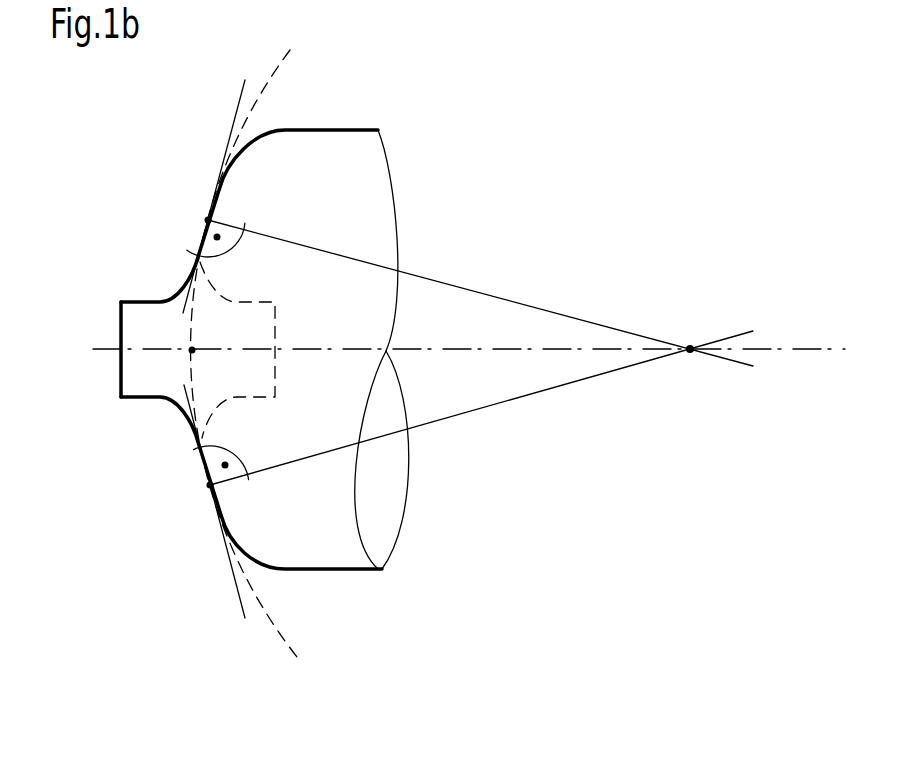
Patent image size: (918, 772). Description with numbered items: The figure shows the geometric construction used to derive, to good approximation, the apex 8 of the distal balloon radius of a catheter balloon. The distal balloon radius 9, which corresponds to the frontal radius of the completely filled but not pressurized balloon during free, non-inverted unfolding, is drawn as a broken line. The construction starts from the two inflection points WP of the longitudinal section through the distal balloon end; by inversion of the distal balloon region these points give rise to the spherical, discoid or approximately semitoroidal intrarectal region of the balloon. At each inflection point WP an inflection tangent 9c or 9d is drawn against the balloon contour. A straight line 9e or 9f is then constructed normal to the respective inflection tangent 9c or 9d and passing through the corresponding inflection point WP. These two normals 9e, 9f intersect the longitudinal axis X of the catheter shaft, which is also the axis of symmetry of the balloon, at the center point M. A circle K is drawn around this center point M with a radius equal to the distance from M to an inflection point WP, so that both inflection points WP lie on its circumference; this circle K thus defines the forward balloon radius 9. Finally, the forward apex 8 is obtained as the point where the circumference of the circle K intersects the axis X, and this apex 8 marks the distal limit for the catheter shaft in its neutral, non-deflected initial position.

The apex 8 is at (188, 352).
The distal balloon radius 9 is at (277, 630).
The inflection tangent 9c is at (228, 143).
The inflection tangent 9d is at (237, 588).
The normal straight line 9e is at (522, 302).
The normal straight line 9f is at (538, 393).
The inflection points WP is at (206, 220).
The center point M is at (690, 346).
The longitudinal axis X is at (787, 349).
The circle K is at (246, 339).